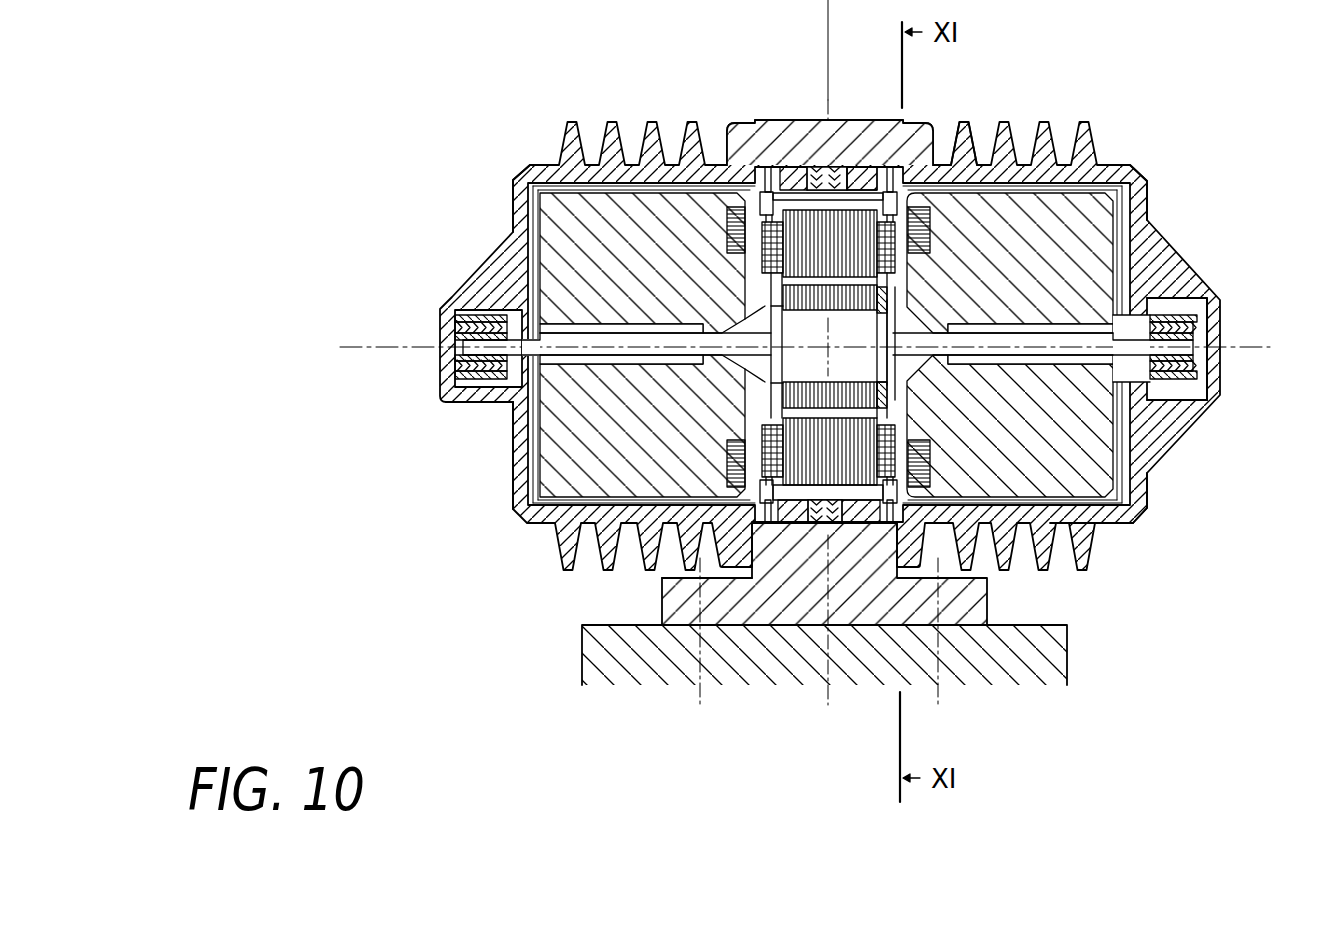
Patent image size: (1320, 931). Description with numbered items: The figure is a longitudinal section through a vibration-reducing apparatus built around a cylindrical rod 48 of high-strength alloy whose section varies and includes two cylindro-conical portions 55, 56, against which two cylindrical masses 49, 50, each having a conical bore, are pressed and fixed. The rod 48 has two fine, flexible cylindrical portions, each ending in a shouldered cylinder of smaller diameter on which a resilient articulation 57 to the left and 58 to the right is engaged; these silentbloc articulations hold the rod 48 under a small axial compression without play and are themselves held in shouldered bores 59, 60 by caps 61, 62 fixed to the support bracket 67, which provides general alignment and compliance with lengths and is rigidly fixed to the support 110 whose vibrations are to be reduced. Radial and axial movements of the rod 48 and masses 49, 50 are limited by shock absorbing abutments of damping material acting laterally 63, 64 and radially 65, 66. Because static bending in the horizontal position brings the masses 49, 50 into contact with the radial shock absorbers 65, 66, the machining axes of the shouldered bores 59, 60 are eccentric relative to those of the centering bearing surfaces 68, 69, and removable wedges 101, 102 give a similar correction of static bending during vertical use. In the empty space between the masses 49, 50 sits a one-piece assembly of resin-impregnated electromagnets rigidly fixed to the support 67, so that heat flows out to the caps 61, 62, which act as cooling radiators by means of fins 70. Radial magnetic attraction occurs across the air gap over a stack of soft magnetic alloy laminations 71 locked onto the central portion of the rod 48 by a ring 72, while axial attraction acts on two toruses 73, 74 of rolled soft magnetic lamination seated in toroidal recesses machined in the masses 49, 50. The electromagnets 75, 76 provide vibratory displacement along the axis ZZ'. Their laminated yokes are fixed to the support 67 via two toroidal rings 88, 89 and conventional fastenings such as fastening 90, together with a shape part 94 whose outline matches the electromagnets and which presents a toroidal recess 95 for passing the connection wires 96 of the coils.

The cylindrical rod 48 is at (1150, 470).
The cylindrical mass 49 is at (605, 248).
The cylindrical mass 50 is at (905, 297).
The cylindro-conical portion 55 is at (738, 358).
The cylindro-conical portion 56 is at (1093, 523).
The resilient articulation 57 is at (497, 398).
The resilient articulation 58 is at (1204, 298).
The shouldered bore 59 is at (495, 403).
The shouldered bore 60 is at (1170, 400).
The cap 61 is at (512, 493).
The cap 62 is at (1127, 520).
The lateral shock absorbing abutment 63 is at (516, 215).
The lateral shock absorbing abutment 64 is at (1133, 180).
The radial shock absorbing abutment 65 is at (577, 185).
The radial shock absorbing abutment 66 is at (973, 167).
The support bracket 67 is at (756, 578).
The centering bearing surface 68 is at (768, 580).
The centering bearing surface 69 is at (867, 527).
The fins 70 is at (938, 257).
The stack of soft magnetic alloy laminations 71 is at (905, 283).
The ring 72 is at (905, 315).
The torus 73 is at (733, 210).
The torus 74 is at (930, 243).
The electromagnet 75 is at (995, 188).
The electromagnet 76 is at (930, 477).
The toroidal ring 88 is at (775, 170).
The toroidal ring 89 is at (895, 170).
The fastening 90 is at (875, 175).
The shape part 94 is at (825, 170).
The toroidal recess 95 is at (805, 507).
The connection wires 96 is at (812, 510).
The removable wedge 101 is at (467, 308).
The removable wedge 102 is at (1175, 400).
The support 110 is at (1053, 660).